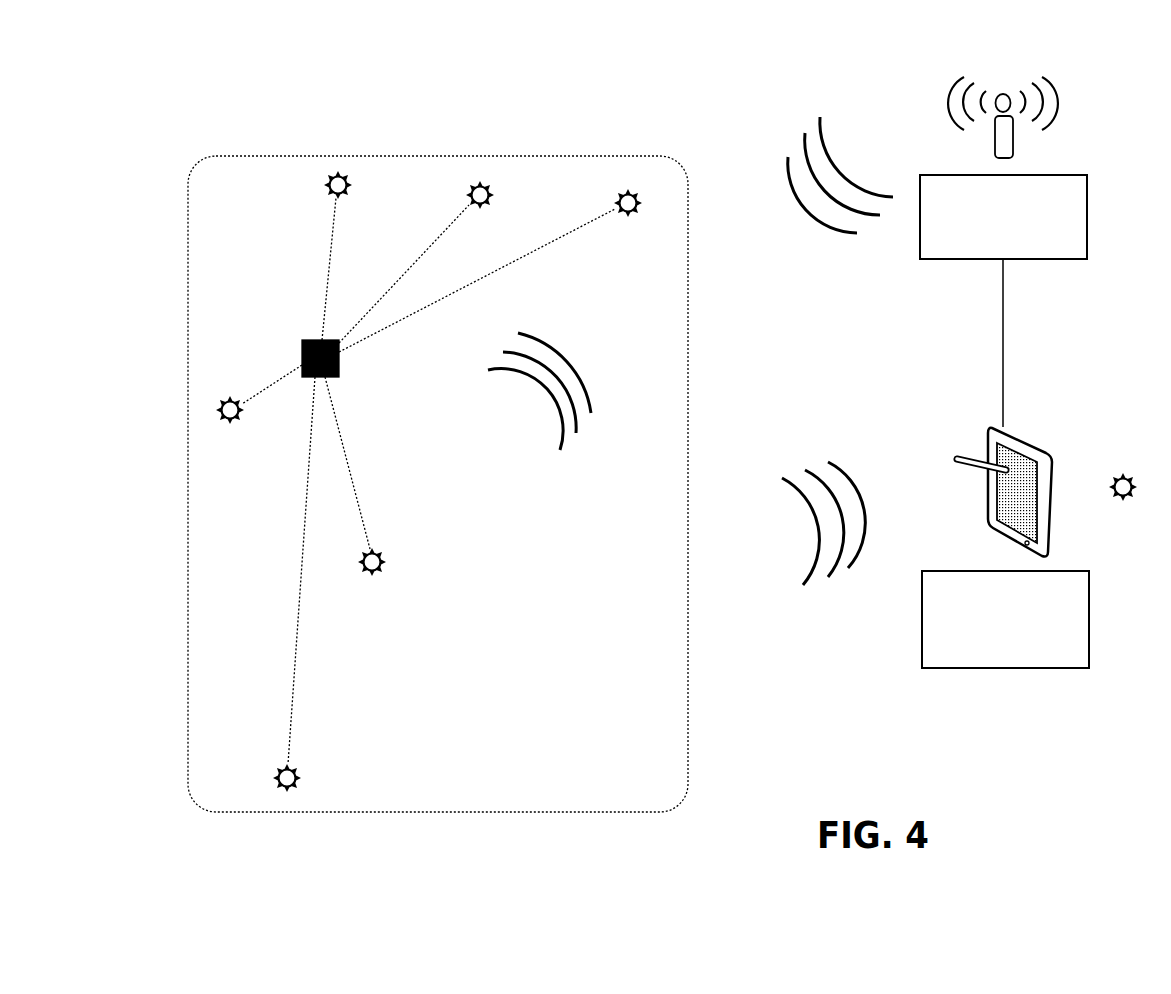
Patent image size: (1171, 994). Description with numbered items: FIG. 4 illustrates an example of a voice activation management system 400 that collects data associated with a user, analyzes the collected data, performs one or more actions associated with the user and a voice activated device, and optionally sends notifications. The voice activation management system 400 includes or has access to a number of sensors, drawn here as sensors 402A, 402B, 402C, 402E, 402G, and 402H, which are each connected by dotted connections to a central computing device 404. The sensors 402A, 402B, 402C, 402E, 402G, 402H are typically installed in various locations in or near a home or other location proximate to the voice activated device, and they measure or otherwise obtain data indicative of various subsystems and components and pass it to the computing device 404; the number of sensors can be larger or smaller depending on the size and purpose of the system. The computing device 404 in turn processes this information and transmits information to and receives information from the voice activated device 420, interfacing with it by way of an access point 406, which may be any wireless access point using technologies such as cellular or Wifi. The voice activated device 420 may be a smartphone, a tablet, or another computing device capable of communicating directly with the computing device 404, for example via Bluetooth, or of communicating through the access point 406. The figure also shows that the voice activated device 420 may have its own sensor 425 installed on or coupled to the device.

The voice activation management system 400 is at (586, 45).
The sensor 402A is at (634, 236).
The sensor 402B is at (441, 208).
The sensor 402C is at (329, 222).
The sensor 402E is at (252, 445).
The sensor 402G is at (410, 561).
The sensor 402H is at (258, 745).
The computing device 404 is at (389, 379).
The access point 406 is at (1003, 168).
The voice activated device 420 is at (1005, 548).
The sensor 425 is at (1053, 498).